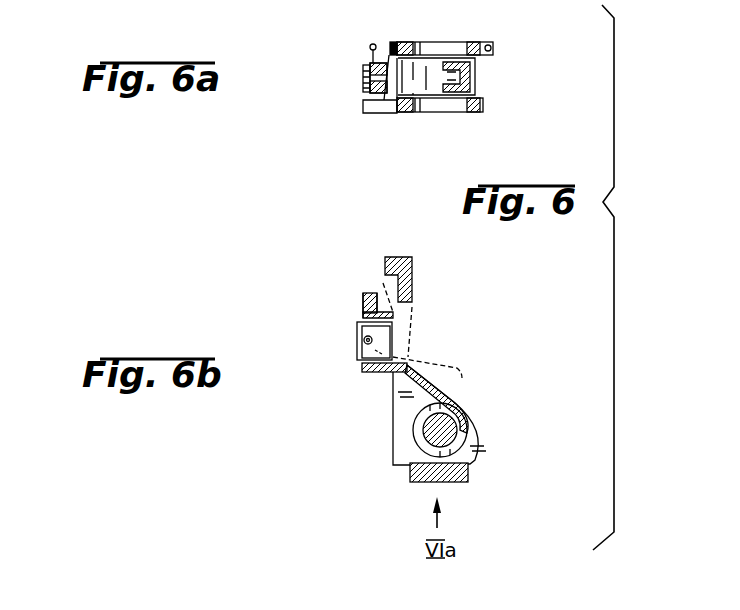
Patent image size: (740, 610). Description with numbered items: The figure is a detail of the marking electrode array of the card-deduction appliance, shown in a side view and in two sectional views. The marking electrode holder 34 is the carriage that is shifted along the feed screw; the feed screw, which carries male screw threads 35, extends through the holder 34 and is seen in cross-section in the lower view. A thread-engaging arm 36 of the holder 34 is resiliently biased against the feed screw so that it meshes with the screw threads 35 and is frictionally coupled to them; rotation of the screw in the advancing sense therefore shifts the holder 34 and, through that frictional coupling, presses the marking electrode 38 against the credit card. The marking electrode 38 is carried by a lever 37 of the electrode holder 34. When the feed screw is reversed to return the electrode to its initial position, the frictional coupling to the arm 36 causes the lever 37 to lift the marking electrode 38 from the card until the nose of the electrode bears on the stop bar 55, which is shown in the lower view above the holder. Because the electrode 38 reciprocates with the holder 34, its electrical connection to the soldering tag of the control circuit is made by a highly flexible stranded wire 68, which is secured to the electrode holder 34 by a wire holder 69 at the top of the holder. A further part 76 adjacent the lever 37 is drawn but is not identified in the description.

In FIG. 6A, the marking electrode holder 34 is at (390, 116).
In FIG. 6B, the marking electrode holder 34 is at (484, 452).
In FIG. 6B, the male screw threads 35 is at (417, 430).
In FIG. 6A, the thread-engaging arm 36 is at (477, 72).
In FIG. 6B, the thread-engaging arm 36 is at (448, 400).
In FIG. 6B, the lever 37 is at (360, 310).
In FIG. 6A, the marking electrode 38 is at (363, 78).
In FIG. 6B, the marking electrode 38 is at (357, 358).
In FIG. 6B, the stop bar 55 is at (412, 293).
In FIG. 6A, the highly flexible stranded wire 68 is at (370, 46).
In FIG. 6A, the wire holder 69 is at (492, 47).
In FIG. 6B, the holder 76 is at (375, 293).